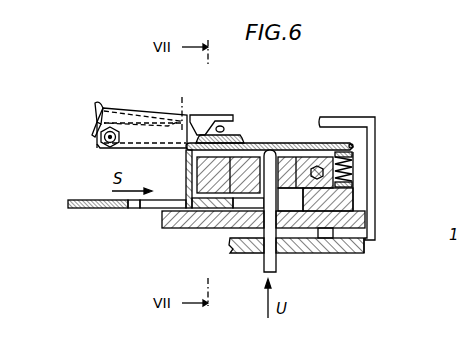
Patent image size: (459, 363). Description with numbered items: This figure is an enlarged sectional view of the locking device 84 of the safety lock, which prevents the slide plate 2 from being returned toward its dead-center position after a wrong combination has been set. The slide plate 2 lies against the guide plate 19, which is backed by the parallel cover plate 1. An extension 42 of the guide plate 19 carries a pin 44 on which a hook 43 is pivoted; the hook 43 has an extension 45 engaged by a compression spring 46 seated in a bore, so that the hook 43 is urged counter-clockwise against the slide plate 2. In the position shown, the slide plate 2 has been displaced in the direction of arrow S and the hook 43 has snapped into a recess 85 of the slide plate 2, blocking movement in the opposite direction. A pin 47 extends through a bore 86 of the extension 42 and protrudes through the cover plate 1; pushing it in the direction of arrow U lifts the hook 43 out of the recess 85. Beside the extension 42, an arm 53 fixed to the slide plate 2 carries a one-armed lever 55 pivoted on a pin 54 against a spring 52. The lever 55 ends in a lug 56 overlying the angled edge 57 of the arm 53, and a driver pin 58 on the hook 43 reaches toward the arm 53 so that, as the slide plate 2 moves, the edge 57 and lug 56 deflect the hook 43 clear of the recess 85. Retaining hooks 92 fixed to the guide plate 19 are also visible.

The cover plate 1 is at (353, 250).
The slide plate 2 is at (78, 210).
The guide plate 19 is at (376, 218).
The extension 42 is at (332, 248).
The hook 43 is at (186, 172).
The pin 44 is at (363, 178).
The extension 45 is at (354, 145).
The compression spring 46 is at (353, 164).
The pin 47 is at (277, 262).
The spring 52 is at (117, 109).
The arm 53 is at (100, 149).
The pin 54 is at (100, 136).
The one-armed lever 55 is at (184, 106).
The lug 56 is at (223, 130).
The edge 57 is at (232, 129).
The driver pin 58 is at (214, 127).
The locking device 84 is at (325, 101).
The recess 85 is at (153, 209).
The bore 86 is at (282, 143).
The retaining hooks 92 is at (368, 118).